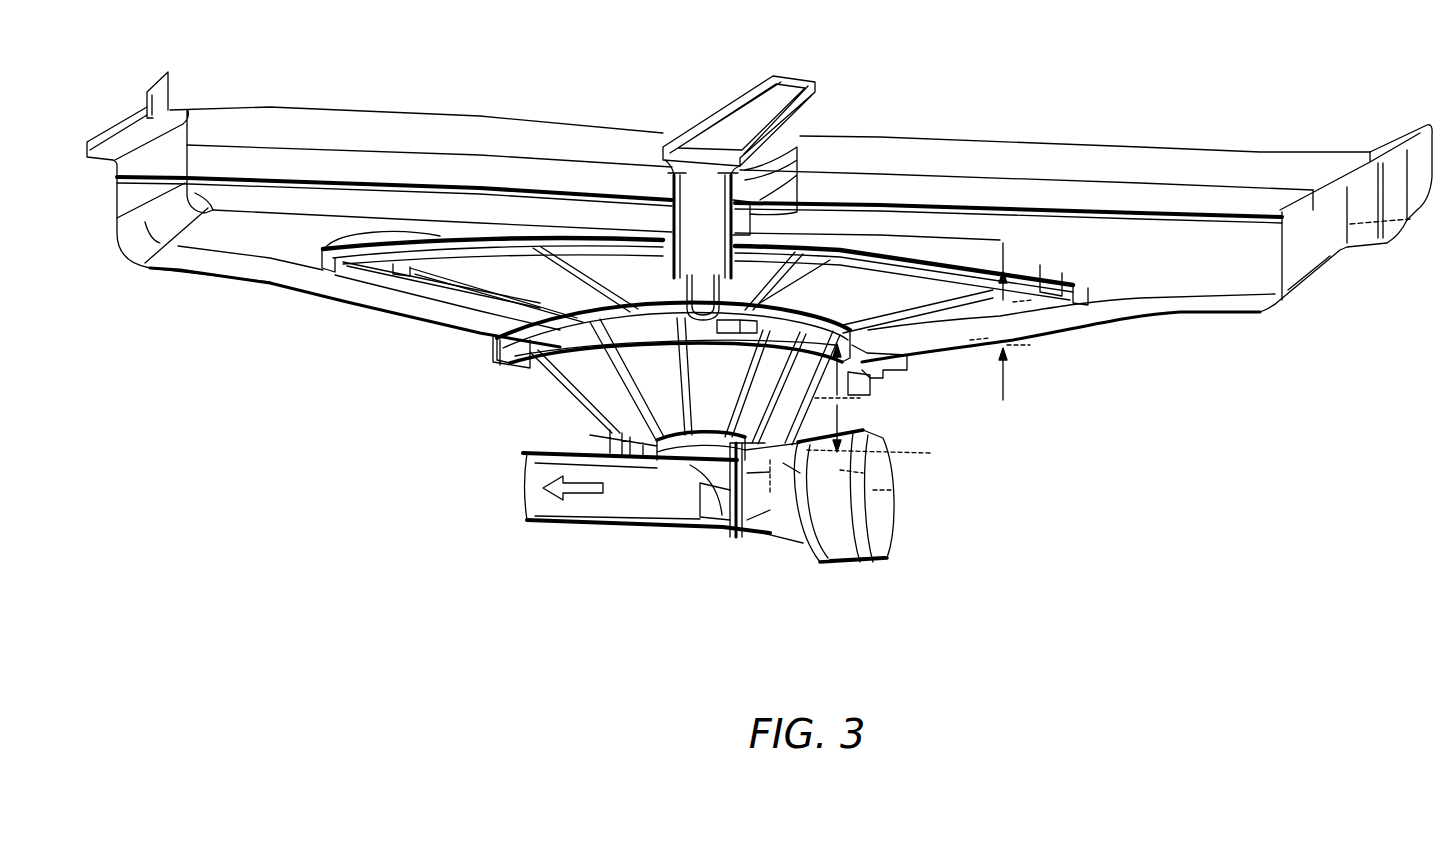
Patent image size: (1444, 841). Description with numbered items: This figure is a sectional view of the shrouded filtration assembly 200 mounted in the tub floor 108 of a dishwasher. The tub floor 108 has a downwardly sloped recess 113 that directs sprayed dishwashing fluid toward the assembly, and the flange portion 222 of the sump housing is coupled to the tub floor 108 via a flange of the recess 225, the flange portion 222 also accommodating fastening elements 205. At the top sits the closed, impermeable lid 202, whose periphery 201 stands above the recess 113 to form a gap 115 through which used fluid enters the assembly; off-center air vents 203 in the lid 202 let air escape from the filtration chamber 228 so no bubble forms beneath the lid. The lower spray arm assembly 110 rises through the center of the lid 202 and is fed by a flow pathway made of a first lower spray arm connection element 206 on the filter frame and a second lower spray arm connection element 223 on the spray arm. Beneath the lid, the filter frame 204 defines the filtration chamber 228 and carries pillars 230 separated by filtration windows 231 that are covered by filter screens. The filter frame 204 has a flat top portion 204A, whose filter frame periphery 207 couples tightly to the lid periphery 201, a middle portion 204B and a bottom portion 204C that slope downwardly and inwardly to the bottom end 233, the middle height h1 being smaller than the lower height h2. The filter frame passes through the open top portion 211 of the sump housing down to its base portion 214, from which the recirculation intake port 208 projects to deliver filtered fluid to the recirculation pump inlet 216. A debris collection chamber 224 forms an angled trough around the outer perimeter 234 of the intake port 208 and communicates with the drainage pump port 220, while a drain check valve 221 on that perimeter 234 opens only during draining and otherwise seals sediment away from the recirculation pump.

The tub floor 108 is at (1250, 158).
The lower spray arm assembly 110 is at (818, 104).
The recess 113 is at (1033, 320).
The gap 115 is at (1127, 293).
The filtration assembly 200 is at (1032, 238).
The periphery of the lid 201 is at (330, 262).
The lid 202 is at (1062, 267).
The air vents 203 is at (783, 213).
The filter frame 204 is at (587, 398).
The top portion of the filter frame 204A is at (1068, 292).
The middle portion of the filter frame 204B is at (493, 270).
The bottom portion of the filter frame 204C is at (820, 410).
The fastening elements 205 is at (612, 371).
The first lower spray arm connection element 206 is at (748, 243).
The filter frame periphery 207 is at (360, 275).
The recirculation intake port 208 is at (697, 470).
The open top portion of the sump housing 211 is at (563, 380).
The base portion of the sump housing 214 is at (703, 530).
The recirculation pump inlet 216 is at (527, 494).
The drainage pump port 220 is at (877, 488).
The drain check valve 221 is at (750, 535).
The flange portion 222 is at (885, 382).
The second lower spray arm connection element 223 is at (772, 170).
The debris collection chamber 224 is at (770, 533).
The flange of the recess 225 is at (482, 247).
The filtration chamber 228 is at (655, 377).
The pillars 230 is at (627, 393).
The filtration windows 231 is at (942, 292).
The bottom end of the filter frame 233 is at (697, 467).
The outer perimeter of the recirculation intake port 234 is at (860, 515).
The vertical height of the middle portion h1 is at (1001, 321).
The vertical height of the bottom portion h2 is at (845, 408).